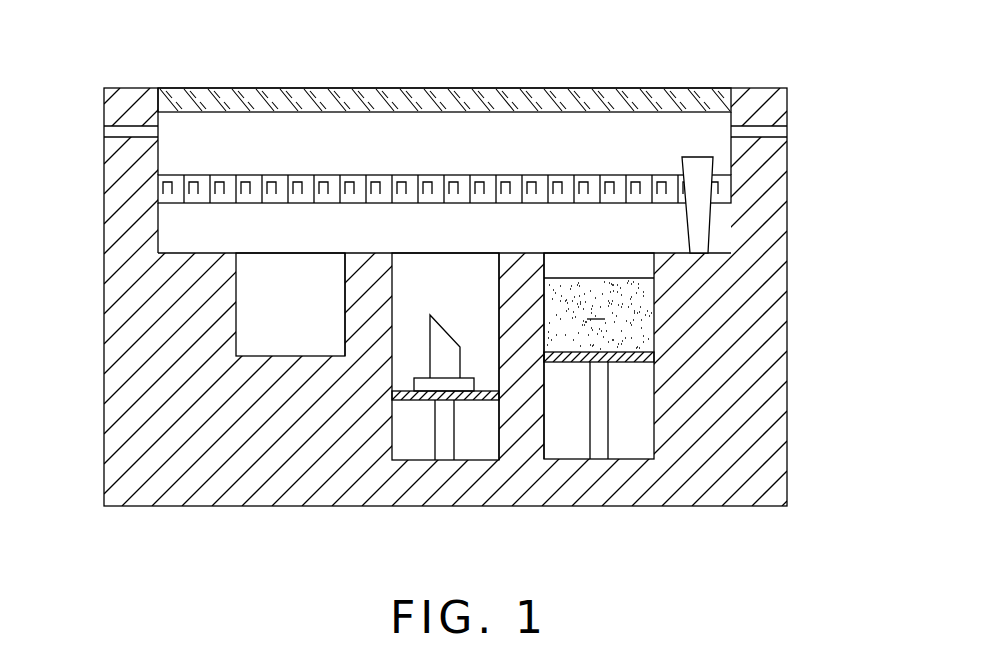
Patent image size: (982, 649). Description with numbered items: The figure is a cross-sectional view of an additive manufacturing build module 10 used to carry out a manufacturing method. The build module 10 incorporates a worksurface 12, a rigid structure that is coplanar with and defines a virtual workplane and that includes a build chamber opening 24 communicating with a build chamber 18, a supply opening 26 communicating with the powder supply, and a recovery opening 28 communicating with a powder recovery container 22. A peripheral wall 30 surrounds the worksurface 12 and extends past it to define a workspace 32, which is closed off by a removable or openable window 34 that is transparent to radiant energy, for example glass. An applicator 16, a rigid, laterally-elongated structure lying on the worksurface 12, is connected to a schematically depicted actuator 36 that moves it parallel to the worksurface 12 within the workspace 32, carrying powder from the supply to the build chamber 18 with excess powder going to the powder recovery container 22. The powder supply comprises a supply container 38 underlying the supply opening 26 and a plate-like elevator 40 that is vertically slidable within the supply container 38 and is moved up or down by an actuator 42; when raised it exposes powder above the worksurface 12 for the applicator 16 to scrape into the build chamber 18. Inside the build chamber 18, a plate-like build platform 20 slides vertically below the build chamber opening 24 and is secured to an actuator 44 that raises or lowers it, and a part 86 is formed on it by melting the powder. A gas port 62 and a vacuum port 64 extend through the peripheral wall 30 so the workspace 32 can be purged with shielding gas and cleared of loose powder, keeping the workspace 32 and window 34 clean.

The additive manufacturing build module 10 is at (703, 72).
The worksurface 12 is at (732, 240).
The applicator 16 is at (700, 168).
The build chamber 18 is at (445, 272).
The build platform 20 is at (404, 390).
The powder recovery container 22 is at (288, 270).
The build chamber opening 24 is at (498, 268).
The supply opening 26 is at (645, 265).
The recovery opening 28 is at (340, 262).
The peripheral wall 30 is at (130, 93).
The workspace 32 is at (574, 163).
The window 34 is at (300, 87).
The actuator 36 is at (228, 178).
The supply container 38 is at (648, 316).
The elevator 40 is at (650, 357).
The actuator 42 is at (600, 420).
The actuator 44 is at (446, 438).
The gas port 62 is at (122, 137).
The vacuum port 64 is at (758, 133).
The part 86 is at (437, 340).